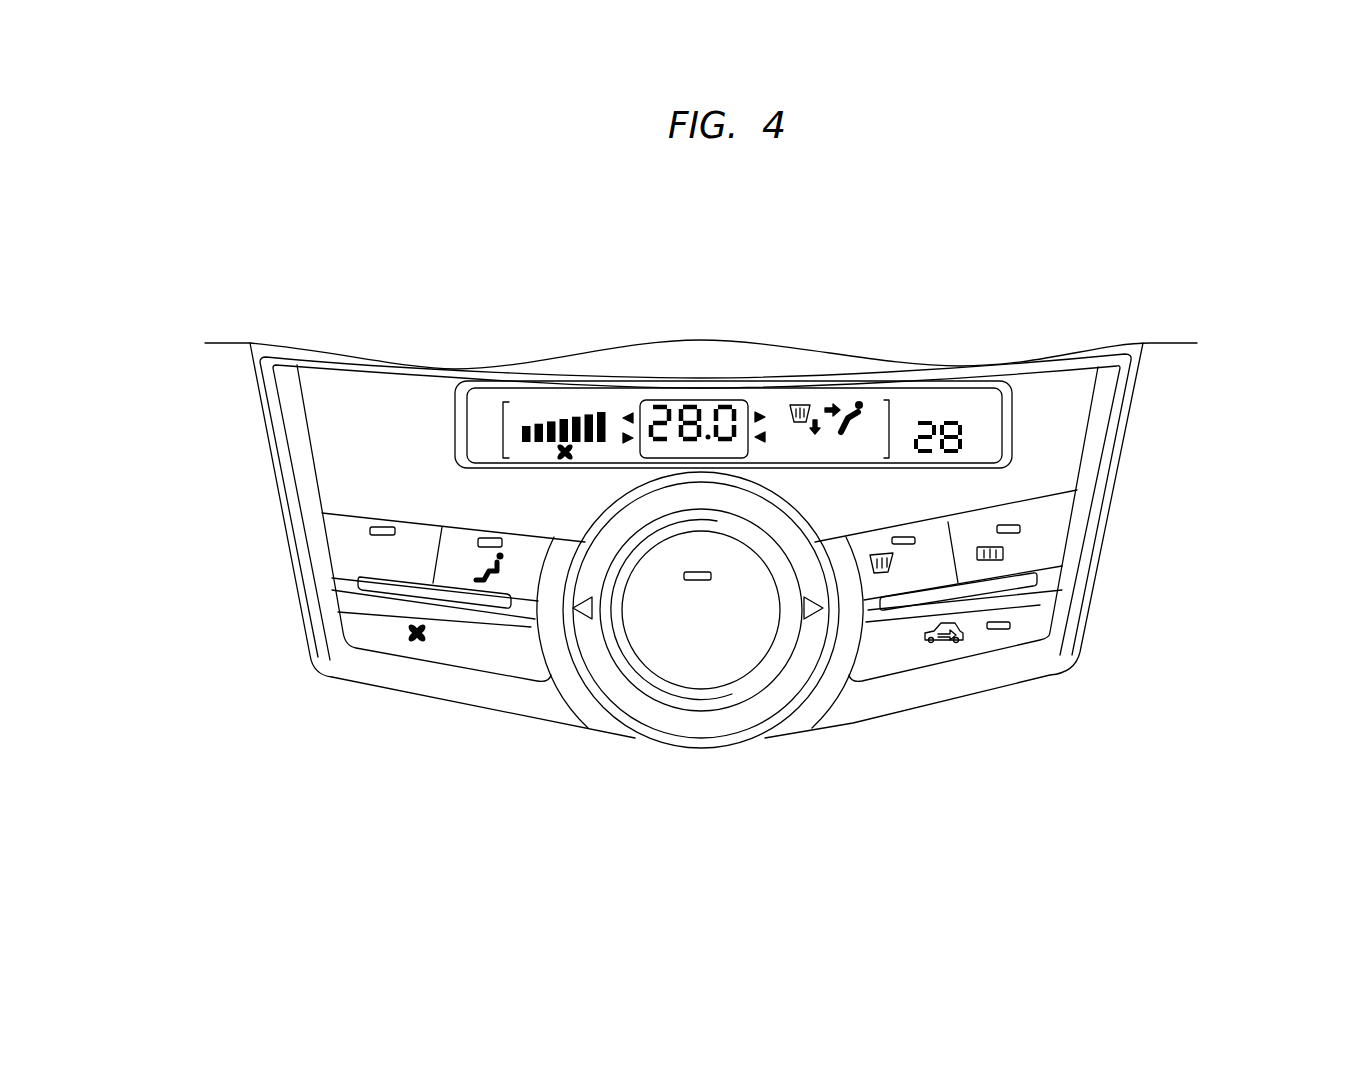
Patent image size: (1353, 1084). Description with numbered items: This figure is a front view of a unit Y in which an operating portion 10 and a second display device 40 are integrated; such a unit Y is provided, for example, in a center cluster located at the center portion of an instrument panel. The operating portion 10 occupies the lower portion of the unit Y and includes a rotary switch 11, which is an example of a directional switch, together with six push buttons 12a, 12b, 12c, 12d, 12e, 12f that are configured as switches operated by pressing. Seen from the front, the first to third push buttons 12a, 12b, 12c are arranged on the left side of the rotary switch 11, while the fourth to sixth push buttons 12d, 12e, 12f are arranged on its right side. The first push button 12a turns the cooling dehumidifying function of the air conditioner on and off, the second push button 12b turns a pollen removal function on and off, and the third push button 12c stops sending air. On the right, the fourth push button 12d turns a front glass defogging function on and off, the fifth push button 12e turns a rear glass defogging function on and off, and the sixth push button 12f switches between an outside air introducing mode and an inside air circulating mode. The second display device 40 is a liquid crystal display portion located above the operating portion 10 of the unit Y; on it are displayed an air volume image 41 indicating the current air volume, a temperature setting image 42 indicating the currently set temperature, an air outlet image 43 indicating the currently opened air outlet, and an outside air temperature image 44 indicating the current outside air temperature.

The operating portion 10 is at (283, 639).
The rotary switch 11 is at (735, 653).
The first push button 12a is at (342, 535).
The second push button 12b is at (460, 568).
The third push button 12c is at (370, 634).
The fourth push button 12d is at (927, 533).
The fifth push button 12e is at (1050, 562).
The sixth push button 12f is at (1033, 628).
The second display device 40 is at (382, 424).
The air volume image 41 is at (594, 396).
The temperature setting image 42 is at (725, 398).
The air outlet image 43 is at (867, 398).
The outside air temperature image 44 is at (989, 411).
The unit Y is at (1209, 428).